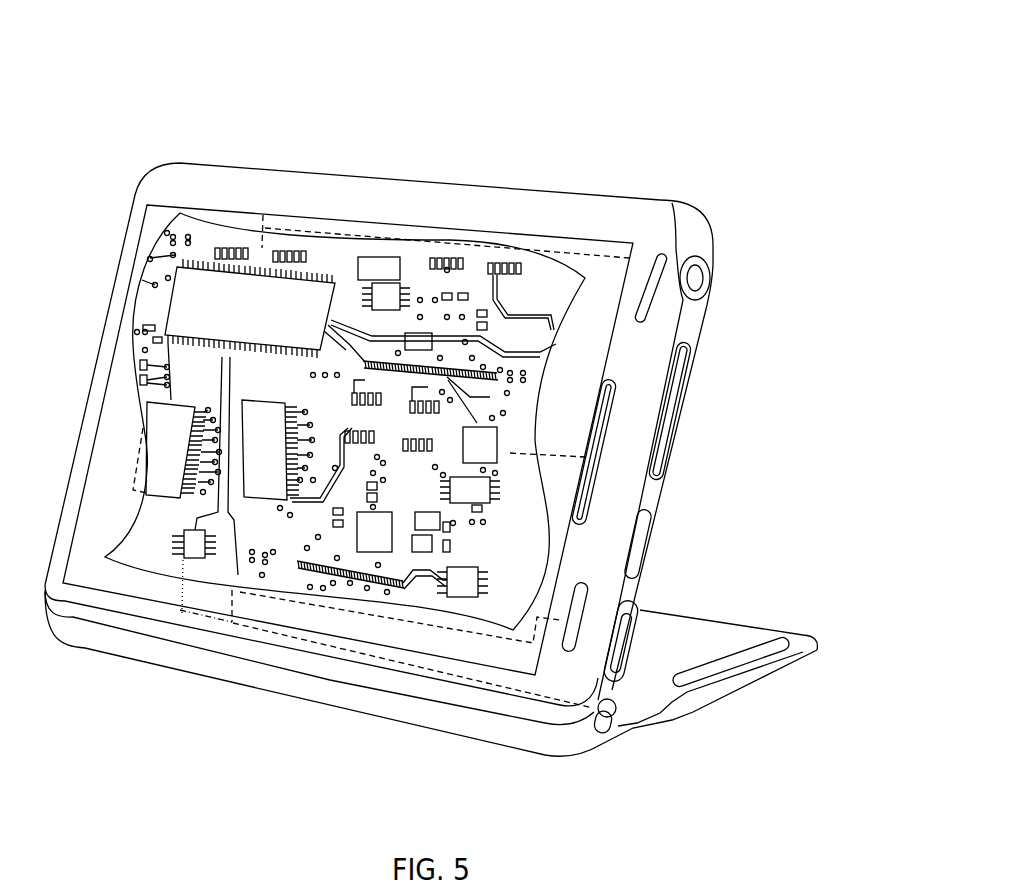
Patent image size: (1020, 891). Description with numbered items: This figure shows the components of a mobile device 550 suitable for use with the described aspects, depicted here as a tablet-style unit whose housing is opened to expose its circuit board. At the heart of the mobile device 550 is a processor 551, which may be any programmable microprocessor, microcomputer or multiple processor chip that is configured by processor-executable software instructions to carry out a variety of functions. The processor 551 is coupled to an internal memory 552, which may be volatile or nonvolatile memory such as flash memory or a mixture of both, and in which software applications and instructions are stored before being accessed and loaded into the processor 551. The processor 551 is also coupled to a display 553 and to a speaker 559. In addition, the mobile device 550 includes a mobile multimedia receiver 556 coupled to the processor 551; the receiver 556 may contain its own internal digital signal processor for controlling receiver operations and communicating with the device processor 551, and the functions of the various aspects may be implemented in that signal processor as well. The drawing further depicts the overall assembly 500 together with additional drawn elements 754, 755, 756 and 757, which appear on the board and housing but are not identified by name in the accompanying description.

The electronic device 500 is at (662, 70).
The mobile device 550 is at (653, 200).
The processor 551 is at (264, 316).
The internal memory 552 is at (185, 434).
The display 553 is at (497, 231).
The mobile multimedia receiver 556 is at (655, 300).
The speaker 559 is at (611, 382).
The hinge pin 754 is at (615, 718).
The chip 755 is at (275, 446).
The component 756 is at (192, 550).
The slot 757 is at (590, 601).